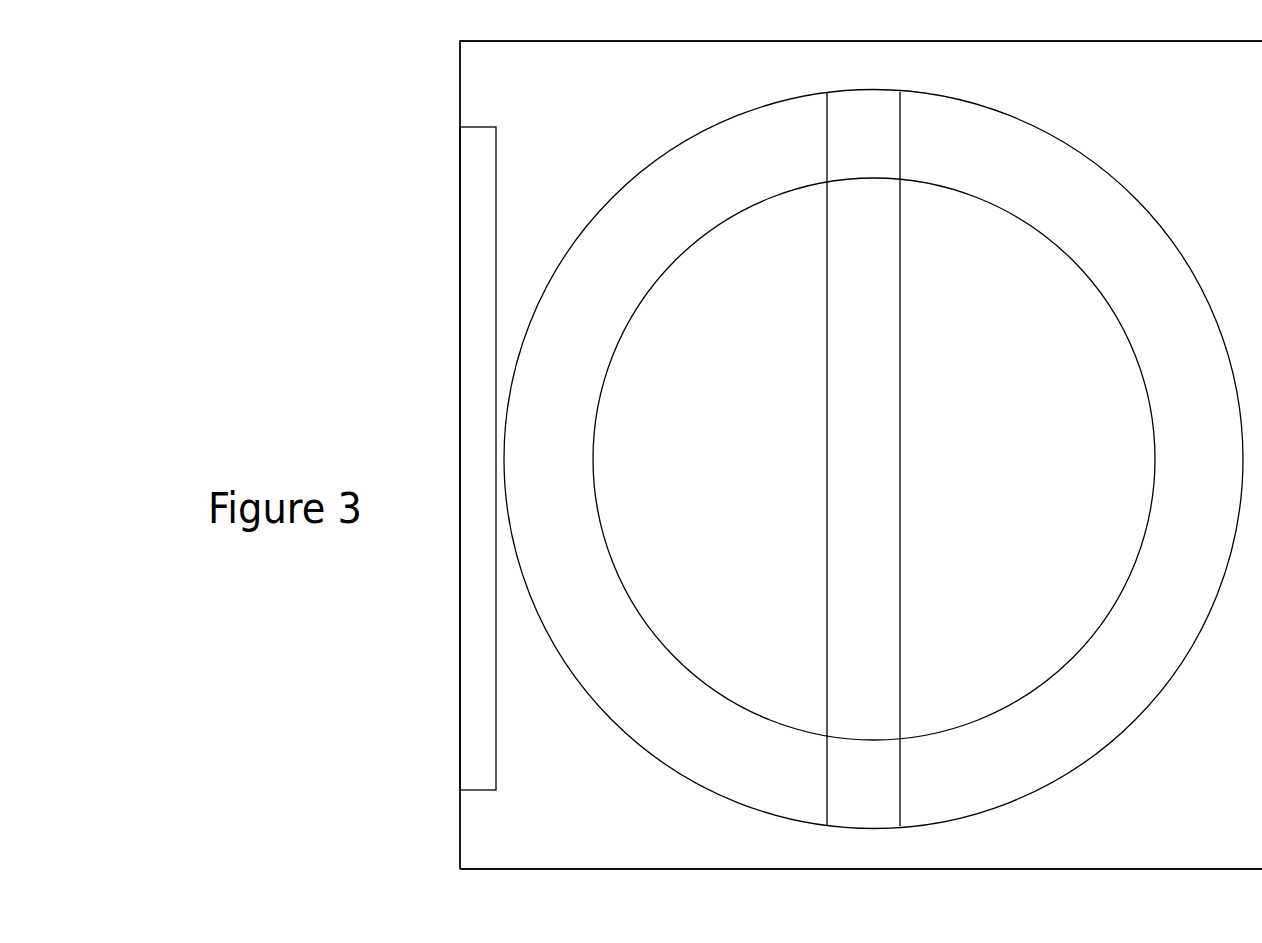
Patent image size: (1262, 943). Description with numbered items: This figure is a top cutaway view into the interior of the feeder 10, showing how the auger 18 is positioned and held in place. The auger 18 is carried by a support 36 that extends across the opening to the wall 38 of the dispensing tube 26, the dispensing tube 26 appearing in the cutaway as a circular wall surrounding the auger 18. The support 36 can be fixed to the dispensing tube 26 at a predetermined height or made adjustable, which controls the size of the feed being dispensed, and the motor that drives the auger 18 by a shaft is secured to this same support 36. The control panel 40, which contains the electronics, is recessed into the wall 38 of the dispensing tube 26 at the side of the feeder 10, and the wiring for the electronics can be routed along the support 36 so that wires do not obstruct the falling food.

The feeder 10 is at (300, 200).
The auger 18 is at (874, 459).
The dispensing tube 26 is at (873, 459).
The support 36 is at (860, 459).
The dispensing tube wall 38 is at (861, 455).
The control panel 40 is at (468, 387).